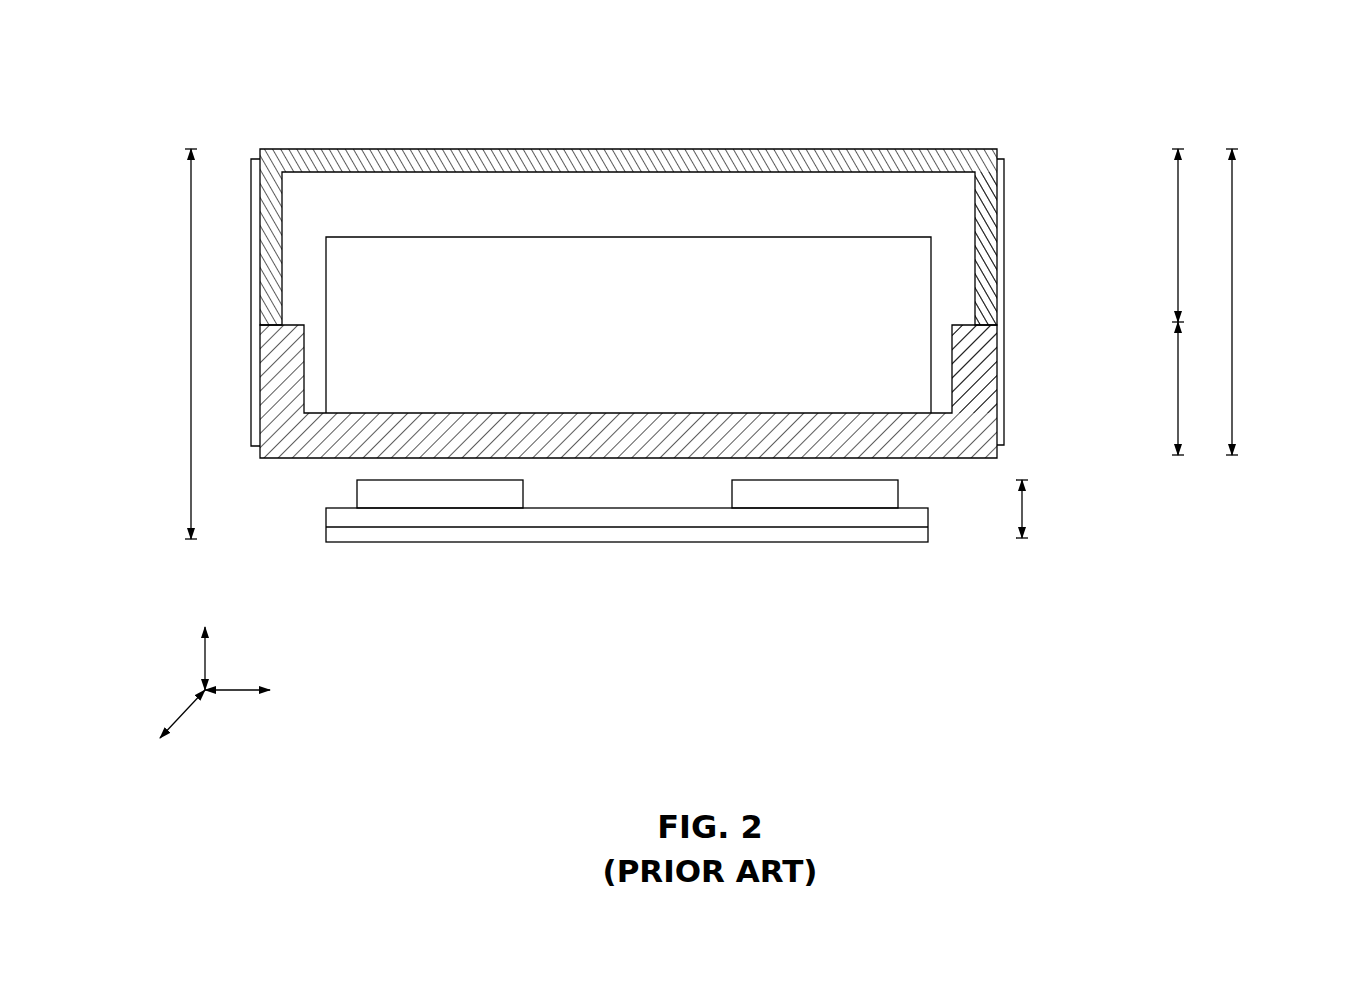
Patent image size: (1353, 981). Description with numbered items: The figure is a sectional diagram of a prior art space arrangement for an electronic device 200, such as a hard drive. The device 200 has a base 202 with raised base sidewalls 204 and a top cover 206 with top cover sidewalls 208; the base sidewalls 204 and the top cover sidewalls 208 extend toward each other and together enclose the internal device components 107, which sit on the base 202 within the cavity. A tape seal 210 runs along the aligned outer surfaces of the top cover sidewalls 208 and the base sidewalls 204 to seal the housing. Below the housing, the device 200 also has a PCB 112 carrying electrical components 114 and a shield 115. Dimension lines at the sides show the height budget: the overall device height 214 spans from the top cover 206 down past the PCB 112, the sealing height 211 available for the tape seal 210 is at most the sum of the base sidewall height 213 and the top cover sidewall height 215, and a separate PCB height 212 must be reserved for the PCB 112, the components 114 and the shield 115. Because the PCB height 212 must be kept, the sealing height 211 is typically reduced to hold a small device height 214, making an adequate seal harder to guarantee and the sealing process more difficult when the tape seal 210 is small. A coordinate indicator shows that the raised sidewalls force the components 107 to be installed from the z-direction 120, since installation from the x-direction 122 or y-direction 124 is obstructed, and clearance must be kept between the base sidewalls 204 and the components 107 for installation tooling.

The electronic device 200 is at (260, 85).
The top cover 206 is at (670, 153).
The top cover sidewalls 208 is at (987, 277).
The tape seal 210 is at (1002, 236).
The base 202 is at (477, 408).
The base sidewalls 204 is at (985, 385).
The internal device components 107 is at (628, 325).
The PCB 112 is at (862, 522).
The shield 115 is at (765, 533).
The electrical components 114 is at (513, 500).
The device height 214 is at (191, 380).
The top cover sidewall height 215 is at (1177, 213).
The base sidewall height 213 is at (1177, 377).
The sealing height 211 is at (1232, 295).
The PCB height 212 is at (1030, 515).
The z-direction 120 is at (205, 588).
The x-direction 122 is at (303, 692).
The y-direction 124 is at (155, 775).